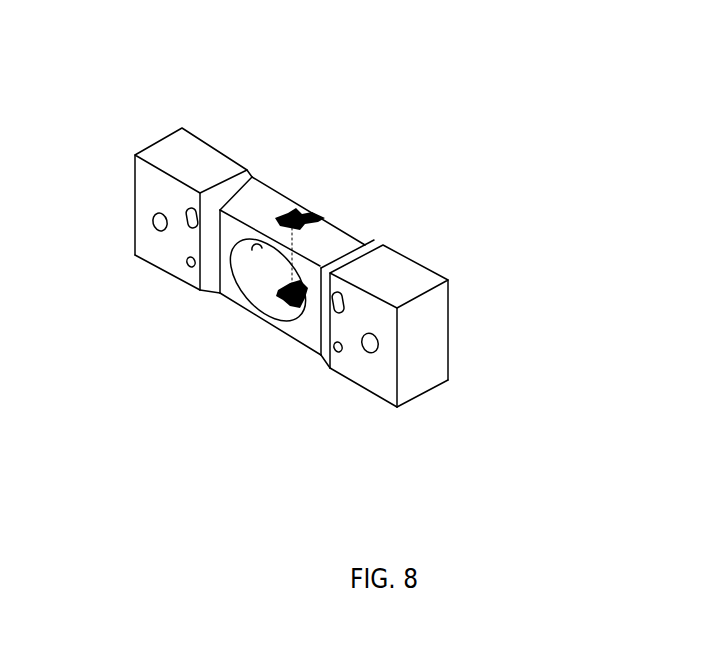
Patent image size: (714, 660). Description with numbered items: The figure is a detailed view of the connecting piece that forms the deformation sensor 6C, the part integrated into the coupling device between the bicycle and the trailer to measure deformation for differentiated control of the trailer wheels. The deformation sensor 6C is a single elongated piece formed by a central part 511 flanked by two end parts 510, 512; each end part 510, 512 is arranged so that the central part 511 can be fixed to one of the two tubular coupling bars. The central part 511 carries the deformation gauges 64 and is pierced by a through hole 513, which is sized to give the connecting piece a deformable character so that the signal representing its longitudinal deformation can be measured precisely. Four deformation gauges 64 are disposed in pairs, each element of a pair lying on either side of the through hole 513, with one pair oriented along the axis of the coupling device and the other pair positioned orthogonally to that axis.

The deformation sensor 6C is at (117, 105).
The end part 510 is at (143, 255).
The central part 511 is at (275, 339).
The end part 512 is at (356, 386).
The through hole 513 is at (257, 289).
The deformation gauges 64 is at (285, 290).